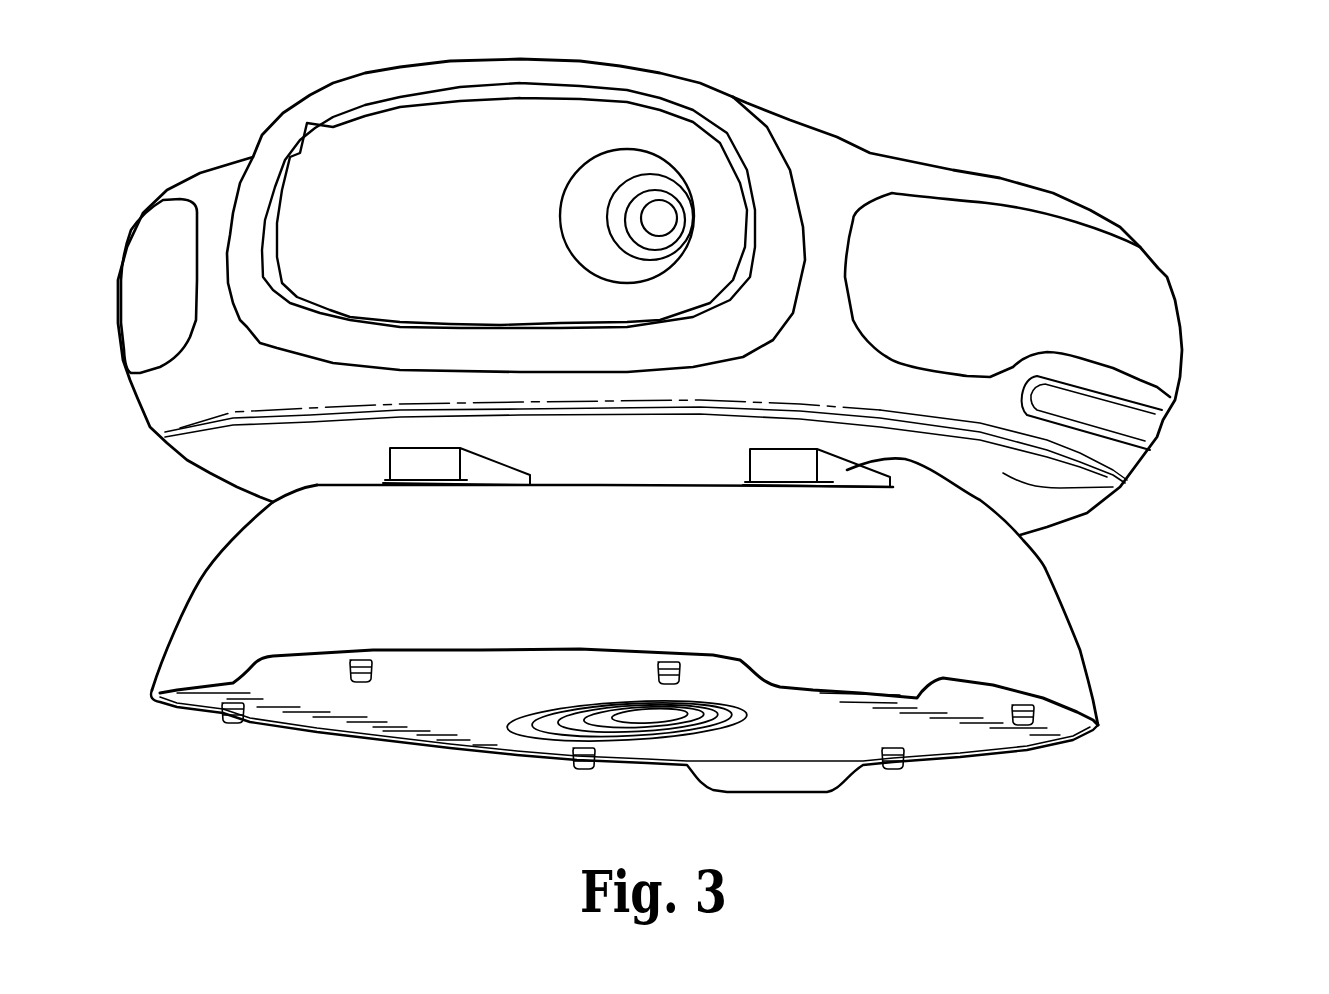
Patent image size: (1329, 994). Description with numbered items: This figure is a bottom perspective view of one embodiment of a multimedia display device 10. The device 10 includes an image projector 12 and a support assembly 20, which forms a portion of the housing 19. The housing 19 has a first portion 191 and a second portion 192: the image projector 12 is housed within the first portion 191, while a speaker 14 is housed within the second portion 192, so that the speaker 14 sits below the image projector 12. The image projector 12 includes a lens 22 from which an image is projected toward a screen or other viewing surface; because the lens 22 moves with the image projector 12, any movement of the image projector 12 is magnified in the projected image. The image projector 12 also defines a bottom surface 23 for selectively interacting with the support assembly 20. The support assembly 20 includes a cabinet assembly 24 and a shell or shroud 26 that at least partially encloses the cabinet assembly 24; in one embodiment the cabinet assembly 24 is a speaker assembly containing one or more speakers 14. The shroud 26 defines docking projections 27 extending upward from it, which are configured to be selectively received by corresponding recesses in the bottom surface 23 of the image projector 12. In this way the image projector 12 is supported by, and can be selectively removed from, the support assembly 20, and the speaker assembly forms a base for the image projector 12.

The multimedia display device 10 is at (1106, 135).
The image projector 12 is at (897, 185).
The speaker 14 is at (734, 755).
The housing 19 is at (1242, 325).
The first portion 191 is at (1194, 377).
The second portion 192 is at (1092, 620).
The support assembly 20 is at (1102, 593).
The lens 22 is at (660, 215).
The bottom surface 23 is at (1120, 487).
The cabinet assembly 24 is at (1078, 750).
The shroud 26 is at (1057, 668).
The docking projections 27 is at (410, 463).